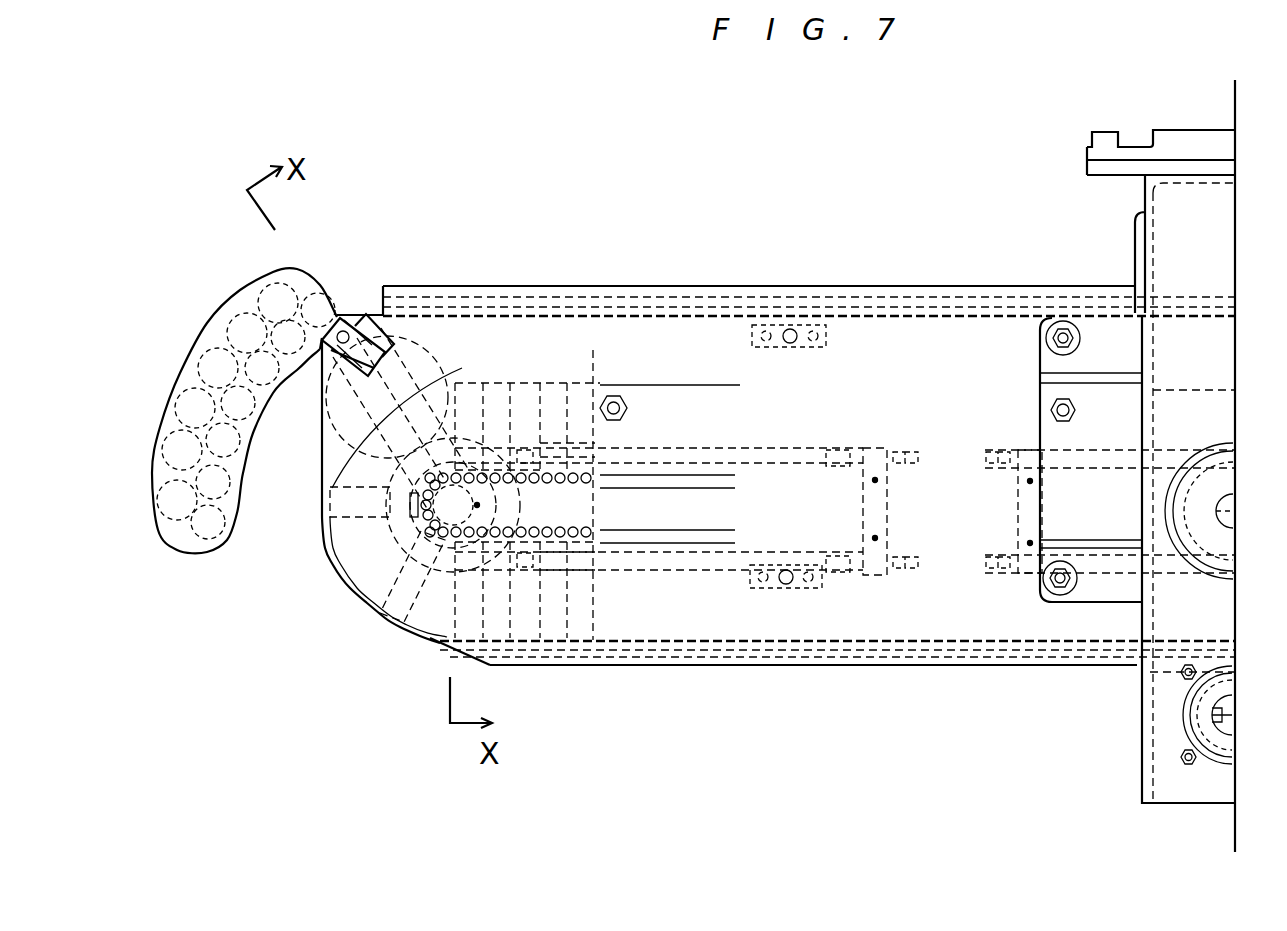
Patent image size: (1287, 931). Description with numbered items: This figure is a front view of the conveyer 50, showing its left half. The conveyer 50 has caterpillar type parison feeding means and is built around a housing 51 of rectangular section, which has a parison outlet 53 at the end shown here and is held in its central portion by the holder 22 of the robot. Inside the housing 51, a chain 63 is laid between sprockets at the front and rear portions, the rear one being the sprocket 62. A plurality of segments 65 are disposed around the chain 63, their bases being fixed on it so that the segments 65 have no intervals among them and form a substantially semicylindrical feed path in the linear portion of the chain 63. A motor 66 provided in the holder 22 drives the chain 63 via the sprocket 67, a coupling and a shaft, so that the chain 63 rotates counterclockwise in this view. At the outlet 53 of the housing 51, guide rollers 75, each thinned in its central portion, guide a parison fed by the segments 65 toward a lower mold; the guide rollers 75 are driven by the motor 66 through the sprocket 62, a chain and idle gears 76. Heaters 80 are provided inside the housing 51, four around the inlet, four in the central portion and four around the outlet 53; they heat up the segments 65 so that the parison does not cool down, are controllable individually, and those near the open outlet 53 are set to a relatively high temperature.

The holder 22 is at (1137, 732).
The conveyer 50 is at (794, 181).
The housing 51 is at (888, 286).
The parison outlet 53 is at (347, 587).
The sprocket 62 is at (407, 552).
The chain 63 is at (590, 522).
The segments 65 is at (548, 395).
The motor 66 is at (1187, 697).
The sprocket 67 is at (1217, 583).
The guide rollers 75 is at (258, 378).
The idle gears 76 is at (258, 345).
The heaters 80 is at (758, 448).